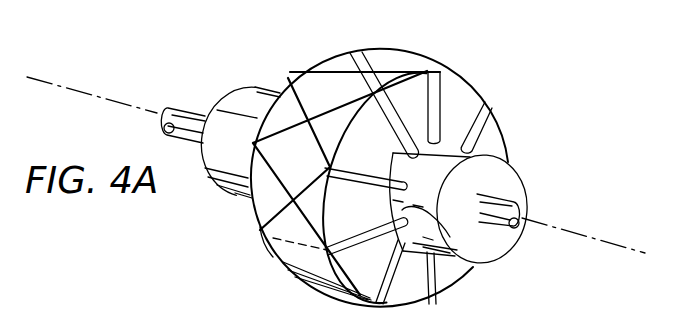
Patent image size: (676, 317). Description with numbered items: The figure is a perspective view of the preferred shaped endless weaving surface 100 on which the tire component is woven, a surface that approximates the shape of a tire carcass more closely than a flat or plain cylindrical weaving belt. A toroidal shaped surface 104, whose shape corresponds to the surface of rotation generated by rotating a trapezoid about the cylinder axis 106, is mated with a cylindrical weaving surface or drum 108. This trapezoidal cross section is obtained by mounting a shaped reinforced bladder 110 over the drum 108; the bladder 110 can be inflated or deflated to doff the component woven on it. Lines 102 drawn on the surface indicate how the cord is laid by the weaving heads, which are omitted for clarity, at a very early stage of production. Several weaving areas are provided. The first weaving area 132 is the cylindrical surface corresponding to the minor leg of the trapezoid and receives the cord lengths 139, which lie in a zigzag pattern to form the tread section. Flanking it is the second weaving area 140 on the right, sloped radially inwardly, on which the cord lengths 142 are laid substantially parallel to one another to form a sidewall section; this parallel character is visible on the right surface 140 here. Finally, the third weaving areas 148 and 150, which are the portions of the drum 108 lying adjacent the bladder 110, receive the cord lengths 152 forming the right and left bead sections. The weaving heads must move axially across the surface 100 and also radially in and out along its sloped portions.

The weaving surface 100 is at (509, 44).
The lines 102 is at (356, 51).
The toroidal shaped surface 104 is at (224, 190).
The cylinder axis 106 is at (336, 165).
The cylindrical weaving surface or drum 108 is at (537, 146).
The shaped reinforced bladder 110 is at (300, 170).
The first weaving area 132 is at (437, 82).
The cord lengths 139 is at (266, 278).
The second weaving area 140 is at (457, 108).
The cord lengths 142 is at (368, 170).
The third weaving area 148 is at (240, 161).
The third weaving area 150 is at (437, 187).
The cord lengths 152 is at (445, 236).